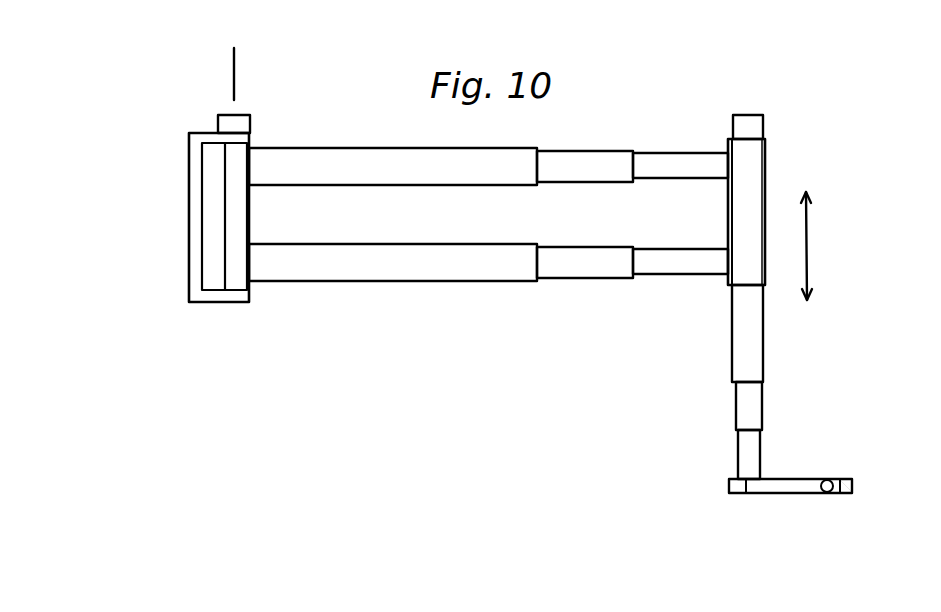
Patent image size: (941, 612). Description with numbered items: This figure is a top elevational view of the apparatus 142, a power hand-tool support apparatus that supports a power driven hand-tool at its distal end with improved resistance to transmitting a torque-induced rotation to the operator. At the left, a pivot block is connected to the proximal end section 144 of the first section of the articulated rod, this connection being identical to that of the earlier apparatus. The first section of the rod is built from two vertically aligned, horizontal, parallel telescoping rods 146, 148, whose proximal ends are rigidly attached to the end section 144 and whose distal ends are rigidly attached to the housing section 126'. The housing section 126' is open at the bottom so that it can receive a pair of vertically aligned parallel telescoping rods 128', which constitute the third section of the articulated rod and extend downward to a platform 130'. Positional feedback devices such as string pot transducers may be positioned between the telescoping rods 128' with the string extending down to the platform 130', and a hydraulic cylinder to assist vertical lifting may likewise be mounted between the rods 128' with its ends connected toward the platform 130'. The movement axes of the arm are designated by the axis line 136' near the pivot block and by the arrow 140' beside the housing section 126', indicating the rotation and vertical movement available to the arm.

The axis line 136' is at (261, 54).
The proximal end section 144 is at (237, 218).
The telescoping rod 146 is at (452, 166).
The telescoping rod 148 is at (452, 266).
The apparatus 142 is at (596, 118).
The housing section 126' is at (799, 212).
The arrow 140' is at (866, 246).
The telescoping rods 128' is at (792, 382).
The platform 130' is at (790, 508).